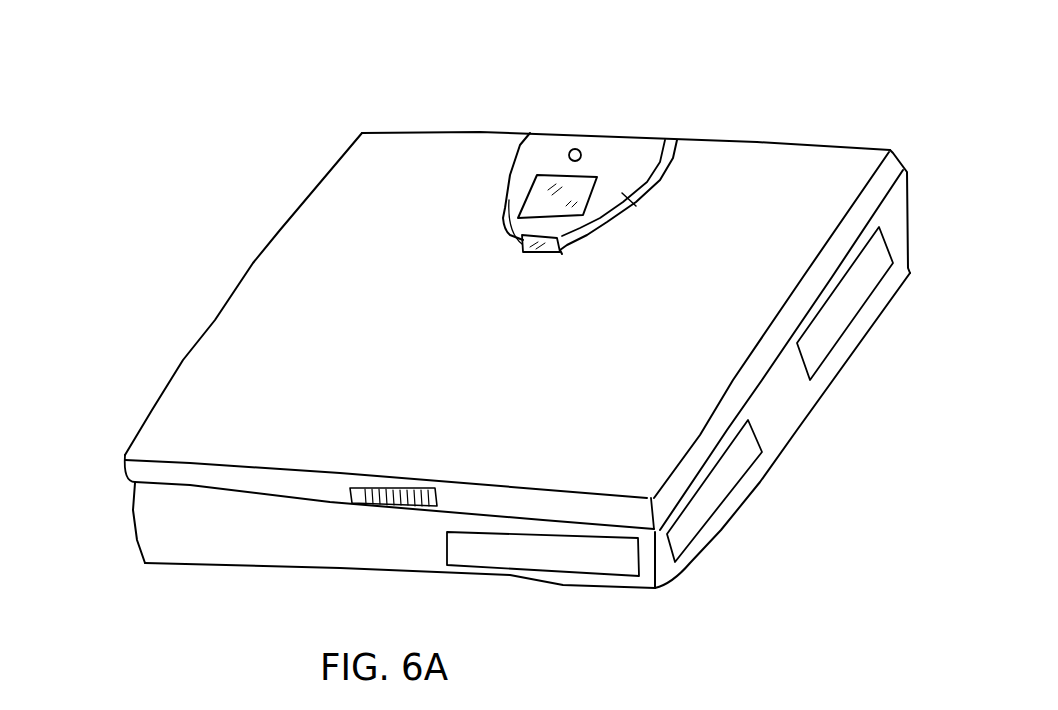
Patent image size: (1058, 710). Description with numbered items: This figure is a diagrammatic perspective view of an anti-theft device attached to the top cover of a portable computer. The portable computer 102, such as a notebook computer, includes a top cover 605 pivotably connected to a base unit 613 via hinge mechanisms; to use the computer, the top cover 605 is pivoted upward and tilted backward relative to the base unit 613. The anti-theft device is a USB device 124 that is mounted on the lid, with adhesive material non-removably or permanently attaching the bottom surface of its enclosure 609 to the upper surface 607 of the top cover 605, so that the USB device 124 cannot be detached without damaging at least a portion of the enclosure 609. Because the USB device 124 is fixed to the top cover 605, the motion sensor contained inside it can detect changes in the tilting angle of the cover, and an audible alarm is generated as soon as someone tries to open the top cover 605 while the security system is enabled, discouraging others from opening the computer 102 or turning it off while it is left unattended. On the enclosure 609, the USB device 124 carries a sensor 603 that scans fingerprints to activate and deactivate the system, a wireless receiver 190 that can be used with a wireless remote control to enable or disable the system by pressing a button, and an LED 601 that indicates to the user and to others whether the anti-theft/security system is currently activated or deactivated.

The portable computer 102 is at (855, 125).
The top cover 605 is at (653, 395).
The base unit 613 is at (148, 538).
The USB device 124 is at (638, 143).
The enclosure 609 is at (637, 205).
The upper surface 607 is at (515, 136).
The LED 601 is at (573, 148).
The sensor 603 is at (525, 210).
The wireless receiver 190 is at (553, 252).